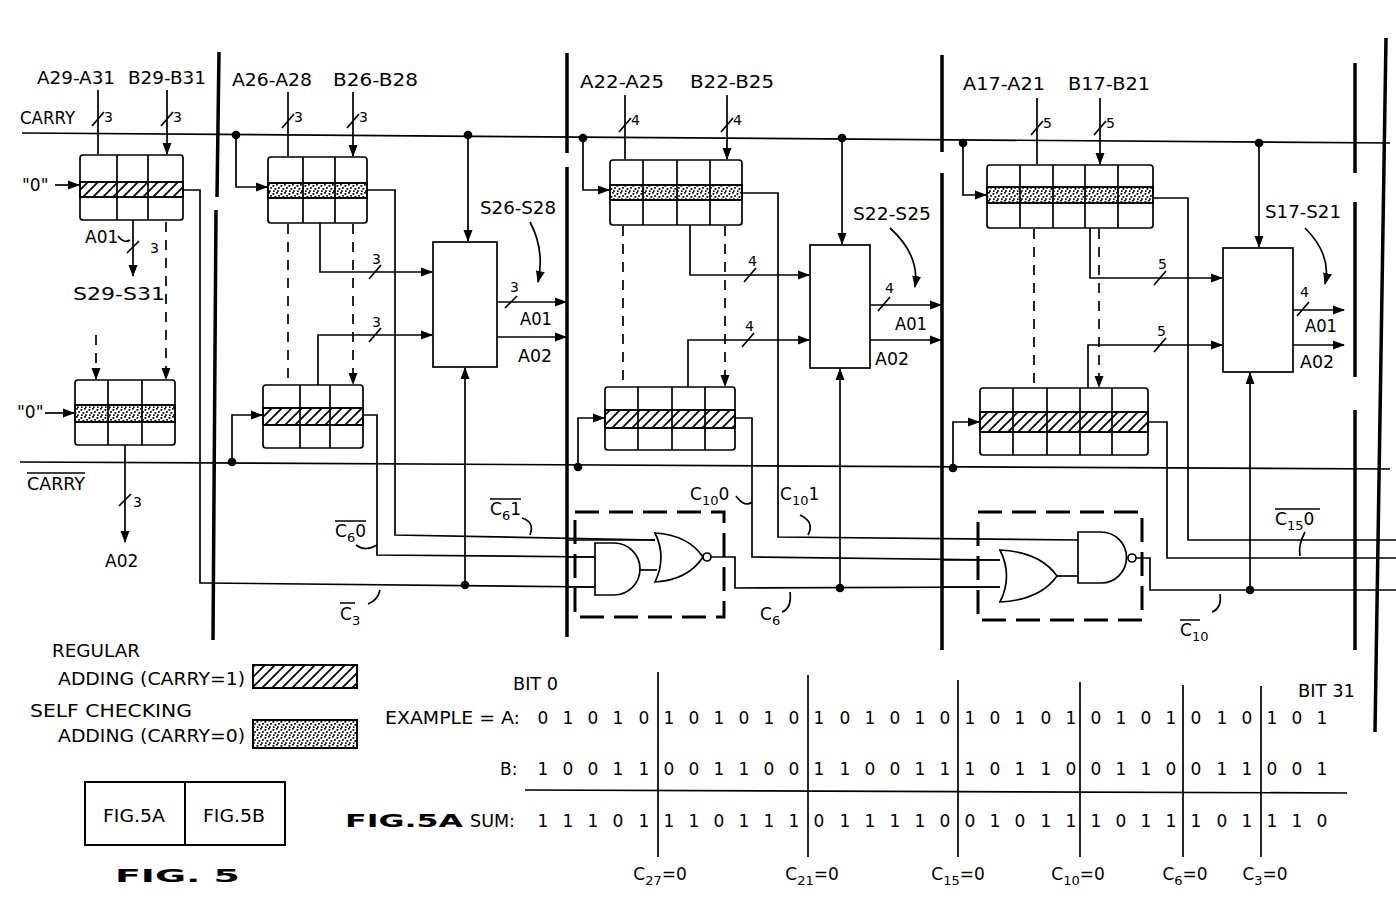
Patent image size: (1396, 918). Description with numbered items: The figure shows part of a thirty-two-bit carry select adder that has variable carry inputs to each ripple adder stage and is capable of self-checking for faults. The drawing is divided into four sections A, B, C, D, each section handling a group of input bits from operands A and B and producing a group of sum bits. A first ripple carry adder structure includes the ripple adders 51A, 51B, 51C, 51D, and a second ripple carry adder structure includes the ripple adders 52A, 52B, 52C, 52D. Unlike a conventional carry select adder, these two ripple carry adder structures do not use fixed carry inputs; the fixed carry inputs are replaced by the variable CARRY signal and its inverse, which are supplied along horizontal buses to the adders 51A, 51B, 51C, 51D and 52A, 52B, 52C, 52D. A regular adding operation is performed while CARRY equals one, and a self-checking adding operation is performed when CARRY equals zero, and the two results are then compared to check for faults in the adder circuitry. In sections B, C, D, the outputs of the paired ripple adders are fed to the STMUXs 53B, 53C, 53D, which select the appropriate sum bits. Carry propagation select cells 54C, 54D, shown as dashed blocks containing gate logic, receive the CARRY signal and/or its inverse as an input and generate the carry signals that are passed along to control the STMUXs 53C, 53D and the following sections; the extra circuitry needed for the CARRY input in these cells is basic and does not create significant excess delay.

The adder section A (bits 29-31) A is at (143, 55).
The adder section B (bits 26-28) B is at (480, 92).
The adder section C (bits 22-25) C is at (838, 99).
The adder section D (bits 17-21) D is at (1243, 99).
The ripple adder 51A is at (78, 208).
The ripple adder 51B is at (268, 222).
The ripple adder 51C is at (612, 226).
The ripple adder 51D is at (1000, 230).
The ripple adder 52A is at (74, 385).
The ripple adder 52B is at (262, 392).
The ripple adder 52C is at (604, 398).
The ripple adder 52D is at (978, 405).
The STMUX 53B is at (447, 240).
The STMUX 53C is at (825, 243).
The STMUX 53D is at (1240, 246).
The CPSEL cell 54C is at (672, 618).
The CPSEL cell 54D is at (1065, 622).